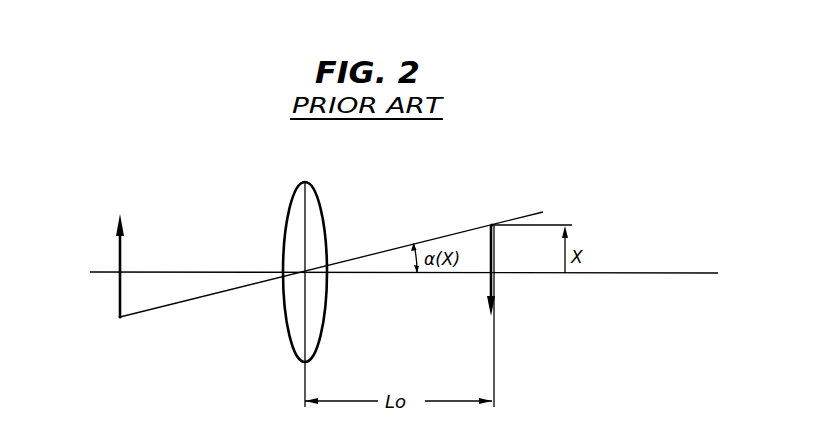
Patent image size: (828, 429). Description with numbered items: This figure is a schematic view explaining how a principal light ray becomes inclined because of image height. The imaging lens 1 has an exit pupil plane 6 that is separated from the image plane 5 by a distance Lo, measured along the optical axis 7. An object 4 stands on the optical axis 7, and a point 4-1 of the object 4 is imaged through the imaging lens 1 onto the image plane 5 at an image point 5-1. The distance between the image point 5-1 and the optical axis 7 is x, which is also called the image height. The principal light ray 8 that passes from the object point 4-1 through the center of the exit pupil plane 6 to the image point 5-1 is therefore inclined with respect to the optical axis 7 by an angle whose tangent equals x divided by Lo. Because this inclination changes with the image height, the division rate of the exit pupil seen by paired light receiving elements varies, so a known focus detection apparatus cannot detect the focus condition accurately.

The imaging lens 1 is at (318, 196).
The object 4 is at (123, 243).
The point of the object 4-1 is at (118, 318).
The image plane 5 is at (495, 285).
The image point 5-1 is at (491, 222).
The exit pupil plane 6 is at (302, 384).
The optical axis 7 is at (660, 275).
The principal light ray 8 is at (531, 214).